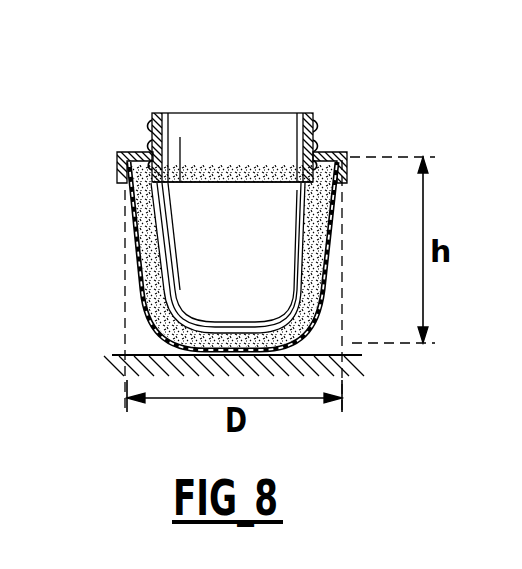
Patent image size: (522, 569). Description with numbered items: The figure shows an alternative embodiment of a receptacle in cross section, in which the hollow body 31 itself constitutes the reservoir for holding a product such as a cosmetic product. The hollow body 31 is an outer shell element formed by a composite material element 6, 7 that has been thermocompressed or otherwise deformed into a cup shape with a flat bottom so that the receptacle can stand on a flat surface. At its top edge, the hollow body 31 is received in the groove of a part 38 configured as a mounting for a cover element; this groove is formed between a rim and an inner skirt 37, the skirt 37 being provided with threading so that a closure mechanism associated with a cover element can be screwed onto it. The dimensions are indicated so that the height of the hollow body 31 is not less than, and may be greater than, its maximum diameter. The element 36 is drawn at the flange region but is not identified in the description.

The part configured as a mounting for a cover element 38 is at (152, 132).
The flange 36 is at (117, 168).
The inner skirt 37 is at (155, 166).
The composite material element 7 is at (126, 193).
The hollow body 31 is at (137, 244).
The composite material element 6 is at (149, 300).